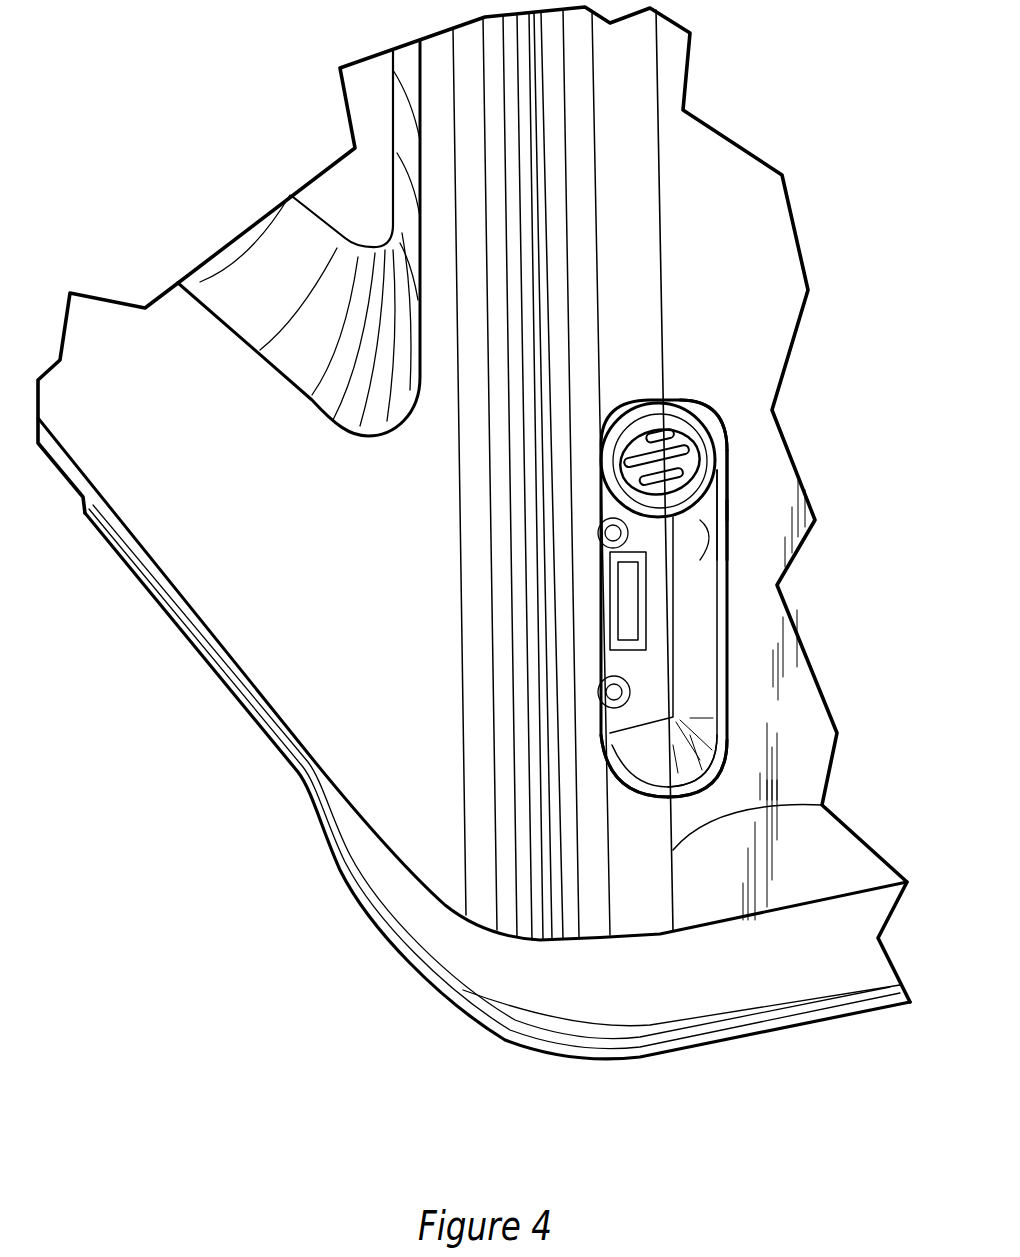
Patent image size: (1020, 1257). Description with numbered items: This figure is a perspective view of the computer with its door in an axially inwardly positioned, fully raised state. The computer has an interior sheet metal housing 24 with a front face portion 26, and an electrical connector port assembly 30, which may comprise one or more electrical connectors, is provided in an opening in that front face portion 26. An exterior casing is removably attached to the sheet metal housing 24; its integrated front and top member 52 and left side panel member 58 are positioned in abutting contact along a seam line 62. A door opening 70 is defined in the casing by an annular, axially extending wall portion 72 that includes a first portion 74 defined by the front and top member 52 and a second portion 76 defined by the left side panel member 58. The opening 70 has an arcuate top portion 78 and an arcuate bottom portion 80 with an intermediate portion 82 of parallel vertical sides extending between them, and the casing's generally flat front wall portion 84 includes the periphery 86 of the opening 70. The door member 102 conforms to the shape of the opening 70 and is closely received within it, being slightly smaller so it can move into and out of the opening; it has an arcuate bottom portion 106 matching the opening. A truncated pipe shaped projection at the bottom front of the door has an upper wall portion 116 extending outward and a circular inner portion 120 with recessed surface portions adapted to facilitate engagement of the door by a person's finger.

The interior sheet metal housing 24 is at (692, 705).
The front face portion 26 is at (692, 705).
The electrical connector port assembly 30 is at (657, 657).
The integrated front and top member 52 is at (497, 782).
The left side panel member 58 is at (472, 679).
The seam line 62 is at (823, 787).
The door opening 70 is at (693, 590).
The casing annular axially extending wall portion 72 is at (735, 505).
The first portion 74 is at (723, 468).
The second portion 76 is at (600, 543).
The arcuate top portion 78 is at (733, 427).
The arcuate bottom portion 80 is at (720, 713).
The intermediate portion 82 is at (693, 660).
The front wall portion 84 is at (563, 518).
The periphery 86 is at (757, 512).
The door member 102 is at (649, 457).
The arcuate bottom portion 106 is at (733, 460).
The upper wall portion 116 is at (688, 432).
The circular inner portion 120 is at (717, 423).